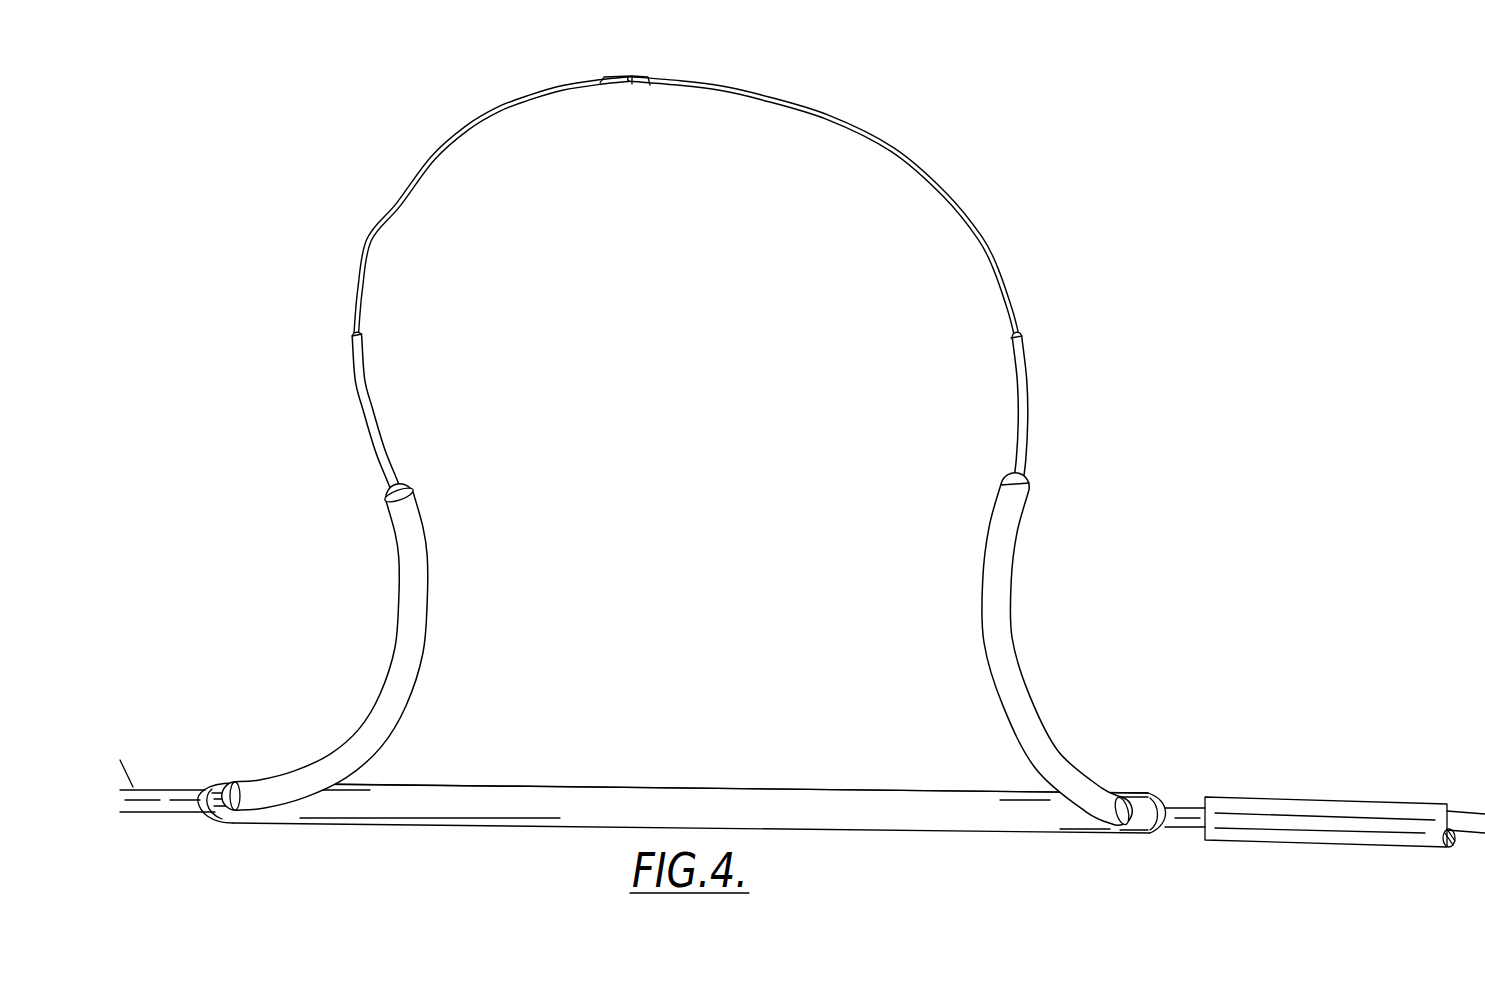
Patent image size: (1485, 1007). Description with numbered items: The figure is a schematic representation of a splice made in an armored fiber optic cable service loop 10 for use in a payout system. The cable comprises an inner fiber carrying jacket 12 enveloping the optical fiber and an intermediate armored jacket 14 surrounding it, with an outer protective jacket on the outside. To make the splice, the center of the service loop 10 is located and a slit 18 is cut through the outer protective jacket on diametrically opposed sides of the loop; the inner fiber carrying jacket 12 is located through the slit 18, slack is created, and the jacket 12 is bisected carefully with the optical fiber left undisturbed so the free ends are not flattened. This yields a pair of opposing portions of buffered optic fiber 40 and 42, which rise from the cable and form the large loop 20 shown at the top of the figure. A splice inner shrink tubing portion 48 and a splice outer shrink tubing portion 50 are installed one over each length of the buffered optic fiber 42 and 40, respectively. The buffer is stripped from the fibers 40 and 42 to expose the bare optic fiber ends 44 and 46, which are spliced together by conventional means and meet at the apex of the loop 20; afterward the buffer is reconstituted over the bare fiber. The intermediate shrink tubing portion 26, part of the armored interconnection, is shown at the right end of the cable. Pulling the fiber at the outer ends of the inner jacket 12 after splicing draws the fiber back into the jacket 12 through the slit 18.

The armored fiber optic cable service loop 10 is at (216, 733).
The inner fiber carrying jacket 12 is at (371, 408).
The intermediate armored jacket 14 is at (622, 795).
The slit 18 is at (420, 798).
The snare loop 20 is at (666, 183).
The intermediate shrink tubing portion 26 is at (1210, 800).
The buffered optic fiber 40 is at (357, 293).
The buffered optic fiber 42 is at (996, 248).
The bare end of optic fiber 44 is at (600, 80).
The bare end of optic fiber 46 is at (636, 84).
The splice inner shrink tubing portion 48 is at (1012, 578).
The splice outer shrink tubing portion 50 is at (430, 558).